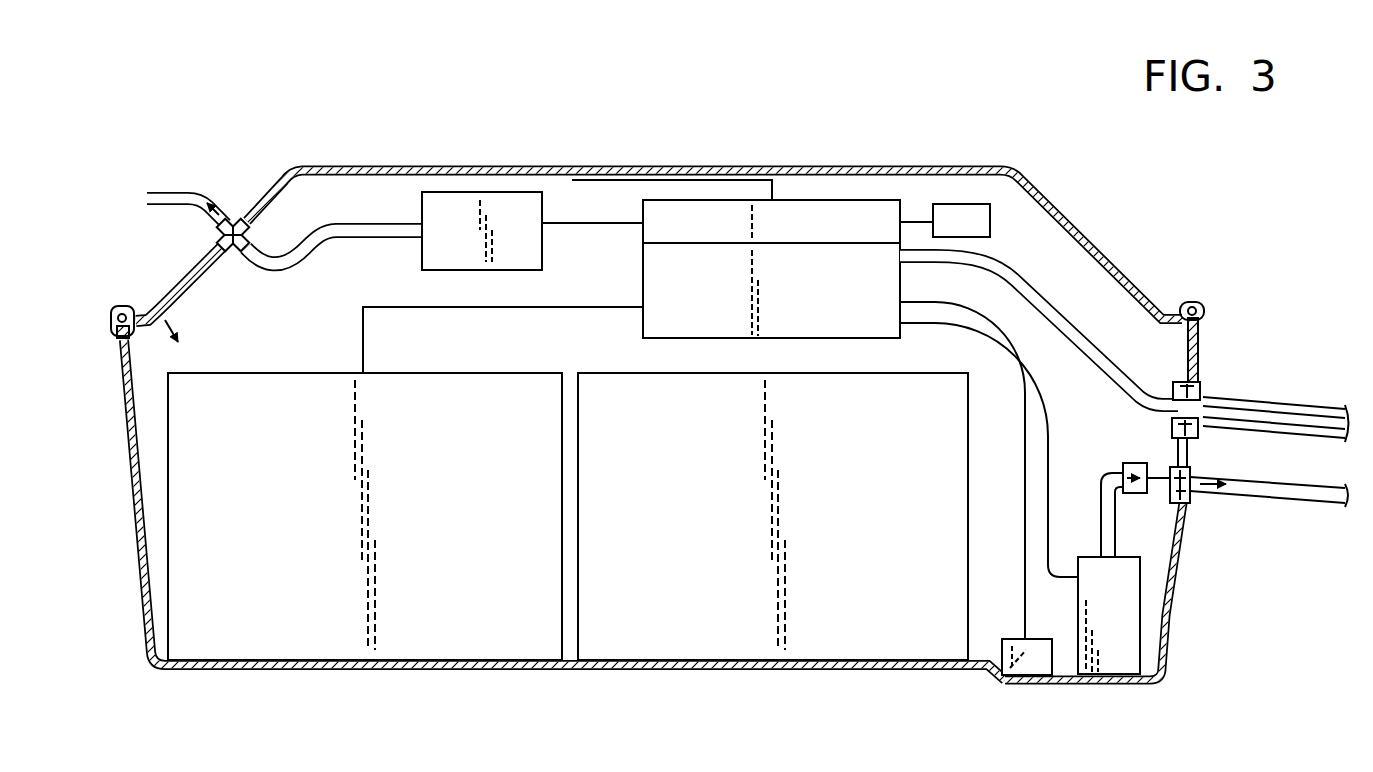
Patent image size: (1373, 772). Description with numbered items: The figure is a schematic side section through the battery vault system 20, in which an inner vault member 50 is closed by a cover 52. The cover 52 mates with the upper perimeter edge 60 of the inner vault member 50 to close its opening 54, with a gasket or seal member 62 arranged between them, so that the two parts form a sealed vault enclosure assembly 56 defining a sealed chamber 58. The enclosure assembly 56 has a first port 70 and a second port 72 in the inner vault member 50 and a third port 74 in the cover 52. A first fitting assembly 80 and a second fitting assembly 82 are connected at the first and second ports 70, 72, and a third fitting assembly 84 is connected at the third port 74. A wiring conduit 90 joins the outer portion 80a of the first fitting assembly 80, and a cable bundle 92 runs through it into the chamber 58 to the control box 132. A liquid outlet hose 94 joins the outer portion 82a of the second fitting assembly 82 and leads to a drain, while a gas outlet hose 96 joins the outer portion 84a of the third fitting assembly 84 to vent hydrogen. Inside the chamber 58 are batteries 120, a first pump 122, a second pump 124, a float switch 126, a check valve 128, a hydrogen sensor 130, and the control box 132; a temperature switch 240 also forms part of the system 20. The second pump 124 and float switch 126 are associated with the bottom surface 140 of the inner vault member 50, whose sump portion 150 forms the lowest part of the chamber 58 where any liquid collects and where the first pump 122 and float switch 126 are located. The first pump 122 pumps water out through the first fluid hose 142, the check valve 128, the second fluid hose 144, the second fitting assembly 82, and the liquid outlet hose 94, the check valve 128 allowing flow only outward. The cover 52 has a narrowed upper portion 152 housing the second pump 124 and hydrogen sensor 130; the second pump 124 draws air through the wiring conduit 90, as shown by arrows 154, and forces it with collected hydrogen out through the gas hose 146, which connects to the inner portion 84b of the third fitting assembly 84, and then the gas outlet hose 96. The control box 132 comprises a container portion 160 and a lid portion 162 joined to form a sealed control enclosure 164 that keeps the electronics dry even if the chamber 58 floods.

The vault system 20 is at (978, 120).
The inner vault member 50 is at (630, 676).
The cover 52 is at (808, 160).
The opening 54 is at (153, 313).
The vault enclosure assembly 56 is at (1150, 262).
The sealed chamber 58 is at (1050, 250).
The upper perimeter edge 60 is at (120, 340).
The seal member 62 is at (112, 312).
The first port 70 is at (1238, 389).
The second port 72 is at (1197, 505).
The third port 74 is at (232, 194).
The first fitting assembly 80 is at (1224, 380).
The outer portion of first fitting assembly 80a is at (1213, 371).
The second fitting assembly 82 is at (1207, 503).
The outer portion of second fitting assembly 82a is at (1220, 503).
The third fitting assembly 84 is at (195, 243).
The outer portion of third fitting assembly 84a is at (200, 226).
The inner portion of third fitting assembly 84b is at (240, 268).
The wiring conduit 90 is at (1307, 405).
The cable bundle 92 is at (1290, 410).
The liquid outlet hose 94 is at (1308, 498).
The gas outlet hose 96 is at (170, 192).
The batteries 120 is at (430, 477).
The first pump 122 is at (1128, 632).
The second pump 124 is at (445, 200).
The float switch 126 is at (1000, 682).
The check valve 128 is at (1115, 517).
The hydrogen sensor 130 is at (580, 183).
The control box 132 is at (826, 194).
The bottom surface 140 is at (1048, 688).
The first fluid hose 142 is at (1142, 497).
The second fluid hose 144 is at (1103, 513).
The gas hose 146 is at (340, 222).
The sump portion 150 is at (980, 678).
The narrowed upper portion 152 is at (1058, 170).
The arrows 154 is at (556, 238).
The container portion 160 is at (818, 294).
The lid portion 162 is at (818, 234).
The sealed control enclosure 164 is at (843, 194).
The temperature switch 240 is at (945, 220).